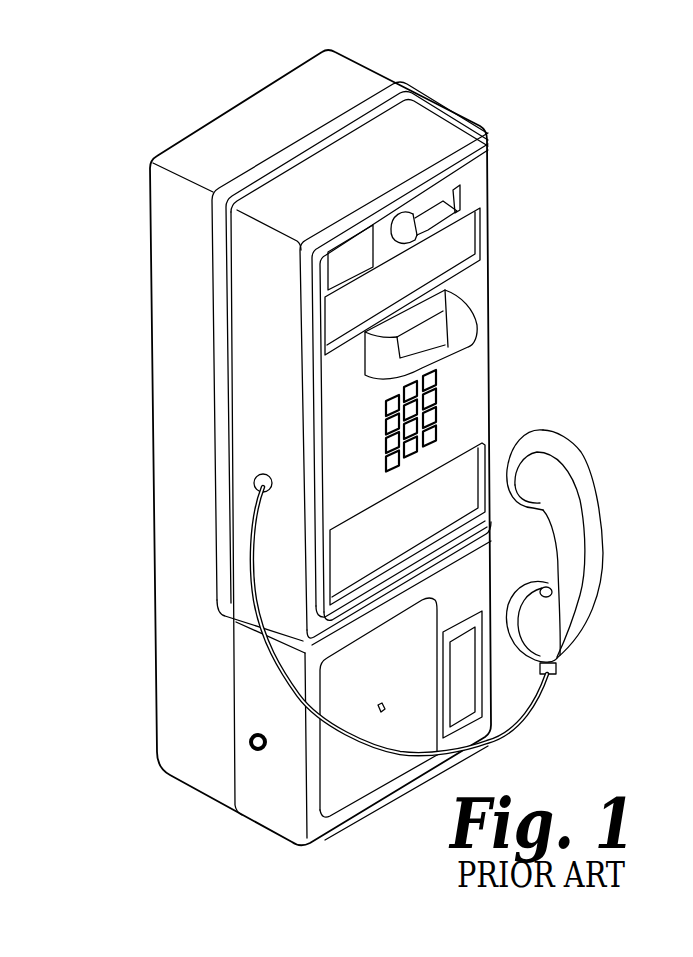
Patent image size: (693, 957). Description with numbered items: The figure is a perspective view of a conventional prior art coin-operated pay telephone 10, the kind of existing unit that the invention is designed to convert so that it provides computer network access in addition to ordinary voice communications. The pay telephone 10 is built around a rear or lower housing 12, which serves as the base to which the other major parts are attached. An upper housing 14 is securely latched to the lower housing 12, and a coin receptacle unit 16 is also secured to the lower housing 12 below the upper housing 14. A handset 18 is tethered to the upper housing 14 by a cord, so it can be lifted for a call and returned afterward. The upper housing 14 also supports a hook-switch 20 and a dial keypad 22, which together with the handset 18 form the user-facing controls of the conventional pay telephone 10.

The pay telephone 10 is at (398, 481).
The lower housing 12 is at (211, 800).
The upper housing 14 is at (390, 352).
The coin receptacle unit 16 is at (273, 830).
The handset 18 is at (593, 616).
The hook-switch 20 is at (481, 307).
The dial keypad 22 is at (436, 398).